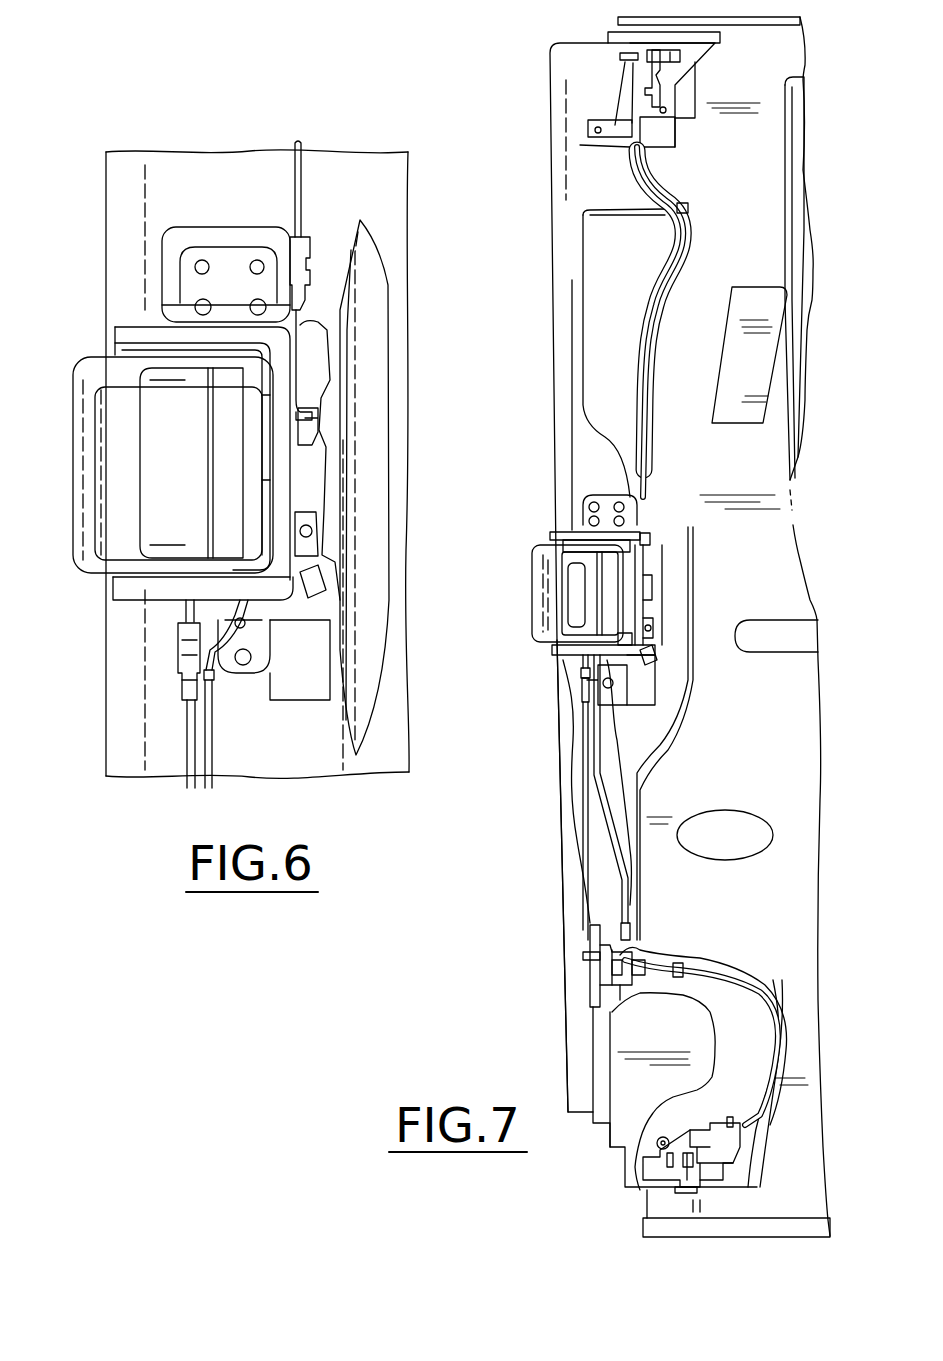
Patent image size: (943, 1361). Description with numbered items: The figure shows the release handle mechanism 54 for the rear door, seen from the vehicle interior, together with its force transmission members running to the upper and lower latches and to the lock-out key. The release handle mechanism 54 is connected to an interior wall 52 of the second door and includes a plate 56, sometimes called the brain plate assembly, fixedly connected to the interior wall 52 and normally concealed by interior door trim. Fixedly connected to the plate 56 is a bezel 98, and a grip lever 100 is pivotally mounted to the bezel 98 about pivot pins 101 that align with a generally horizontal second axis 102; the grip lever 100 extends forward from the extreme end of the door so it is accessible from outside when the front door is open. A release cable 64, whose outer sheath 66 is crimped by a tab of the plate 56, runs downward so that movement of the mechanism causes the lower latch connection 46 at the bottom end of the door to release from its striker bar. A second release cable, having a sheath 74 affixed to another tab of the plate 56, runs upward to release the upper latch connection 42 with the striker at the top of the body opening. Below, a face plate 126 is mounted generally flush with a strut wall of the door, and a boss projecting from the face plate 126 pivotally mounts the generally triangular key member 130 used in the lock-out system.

In FIG. 7, the latch connection 42 is at (668, 108).
In FIG. 7, the latch connection 46 is at (713, 1130).
In FIG. 7, the interior wall 52 is at (627, 730).
In FIG. 6, the release handle mechanism 54 is at (86, 342).
In FIG. 7, the release handle mechanism 54 is at (538, 528).
In FIG. 6, the plate 56 is at (270, 255).
In FIG. 7, the plate 56 is at (602, 496).
In FIG. 6, the release cable 64 is at (302, 165).
In FIG. 7, the outer sheath 66 is at (583, 772).
In FIG. 7, the sheath 74 is at (660, 303).
In FIG. 6, the bezel 98 is at (118, 597).
In FIG. 6, the grip lever 100 is at (73, 485).
In FIG. 7, the grip lever 100 is at (537, 594).
In FIG. 7, the pivot pins 101 is at (620, 540).
In FIG. 6, the second axis 102 is at (252, 692).
In FIG. 7, the face plate 126 is at (590, 995).
In FIG. 7, the key member 130 is at (590, 952).